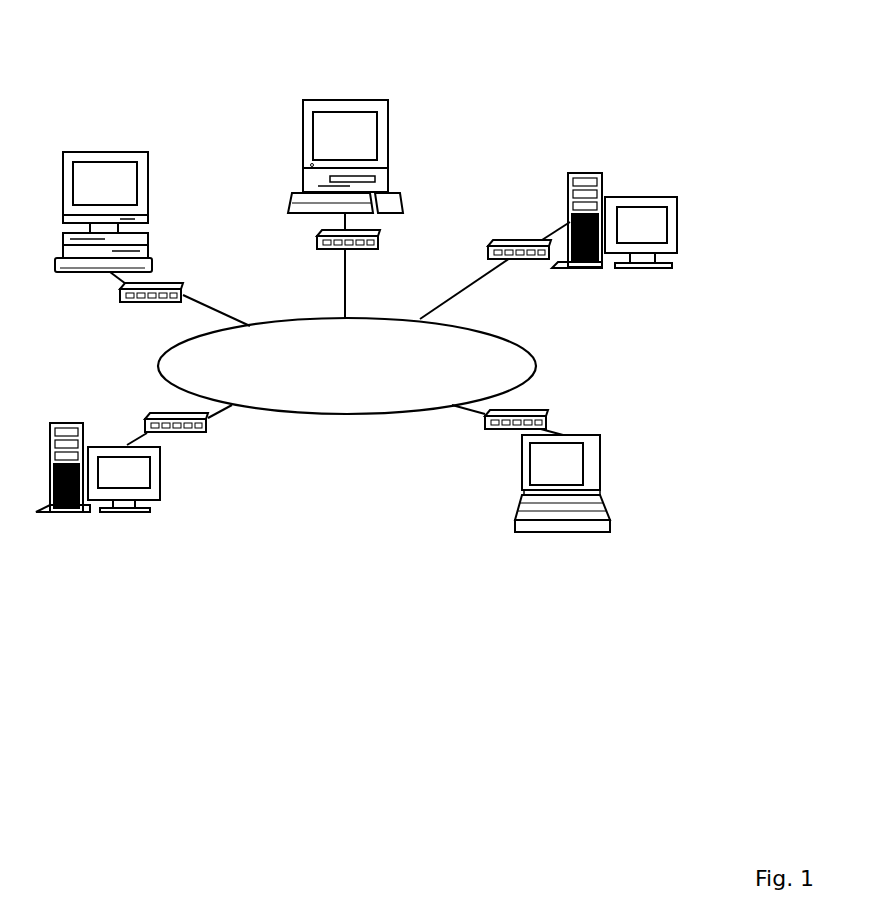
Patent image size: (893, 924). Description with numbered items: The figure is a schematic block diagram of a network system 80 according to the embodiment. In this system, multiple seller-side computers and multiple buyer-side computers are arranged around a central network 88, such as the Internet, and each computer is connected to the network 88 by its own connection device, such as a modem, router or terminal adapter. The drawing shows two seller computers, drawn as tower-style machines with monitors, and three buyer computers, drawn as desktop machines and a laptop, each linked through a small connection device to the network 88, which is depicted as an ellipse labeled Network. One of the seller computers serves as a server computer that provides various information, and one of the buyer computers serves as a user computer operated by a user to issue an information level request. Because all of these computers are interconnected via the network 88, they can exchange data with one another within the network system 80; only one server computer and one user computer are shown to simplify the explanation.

The network system 80 is at (188, 66).
The network 88 is at (528, 342).